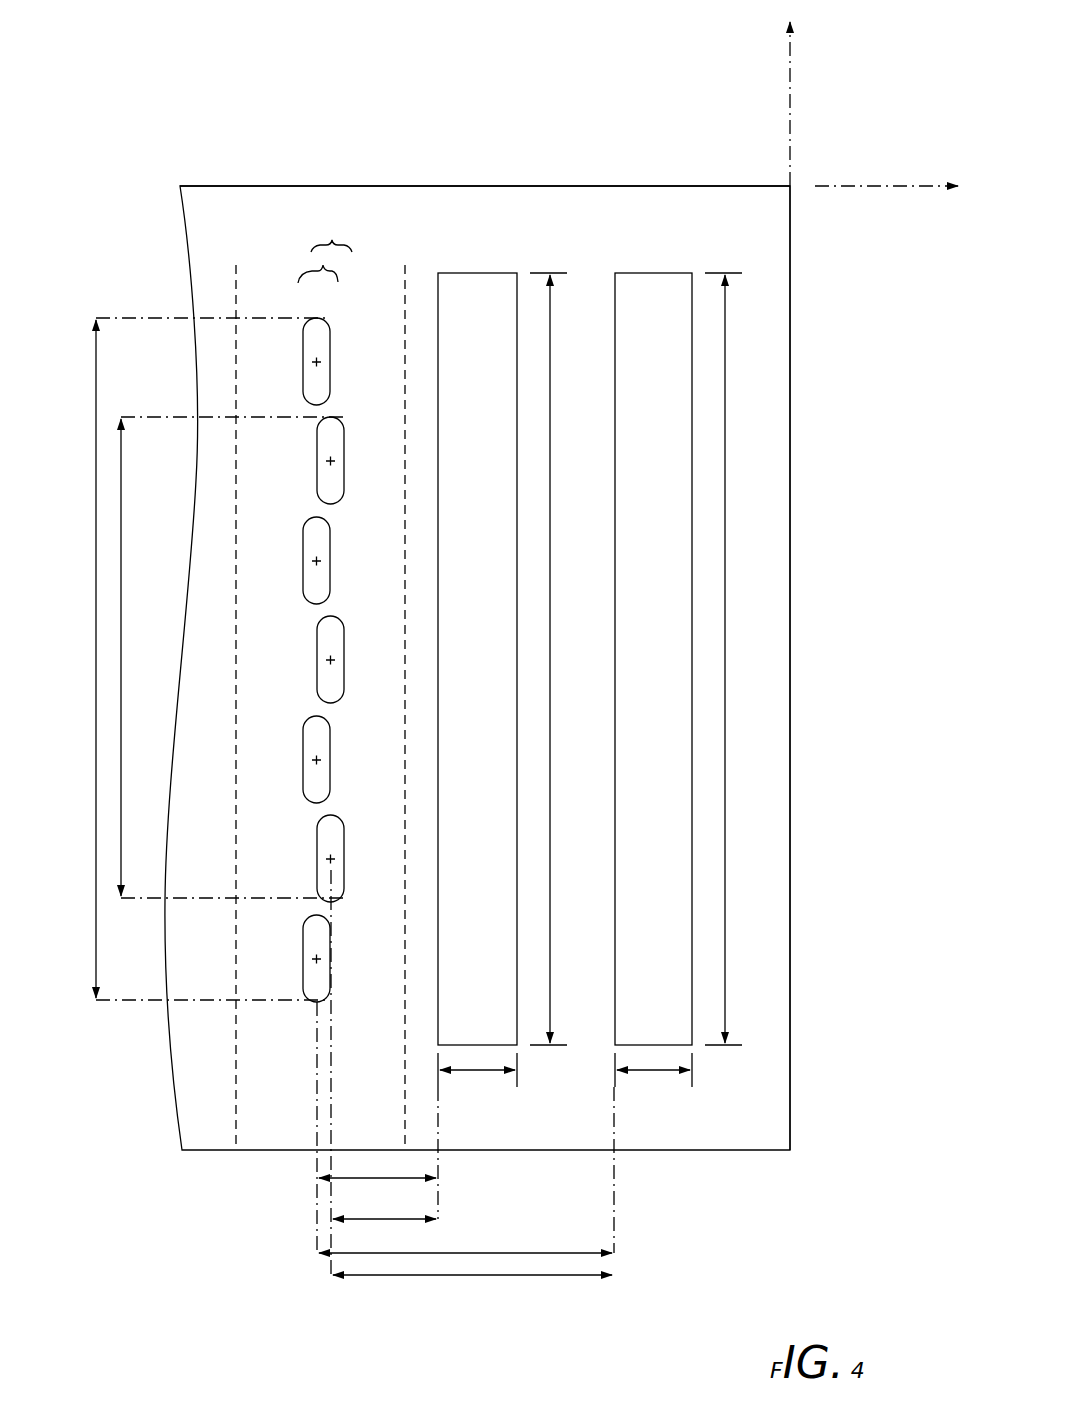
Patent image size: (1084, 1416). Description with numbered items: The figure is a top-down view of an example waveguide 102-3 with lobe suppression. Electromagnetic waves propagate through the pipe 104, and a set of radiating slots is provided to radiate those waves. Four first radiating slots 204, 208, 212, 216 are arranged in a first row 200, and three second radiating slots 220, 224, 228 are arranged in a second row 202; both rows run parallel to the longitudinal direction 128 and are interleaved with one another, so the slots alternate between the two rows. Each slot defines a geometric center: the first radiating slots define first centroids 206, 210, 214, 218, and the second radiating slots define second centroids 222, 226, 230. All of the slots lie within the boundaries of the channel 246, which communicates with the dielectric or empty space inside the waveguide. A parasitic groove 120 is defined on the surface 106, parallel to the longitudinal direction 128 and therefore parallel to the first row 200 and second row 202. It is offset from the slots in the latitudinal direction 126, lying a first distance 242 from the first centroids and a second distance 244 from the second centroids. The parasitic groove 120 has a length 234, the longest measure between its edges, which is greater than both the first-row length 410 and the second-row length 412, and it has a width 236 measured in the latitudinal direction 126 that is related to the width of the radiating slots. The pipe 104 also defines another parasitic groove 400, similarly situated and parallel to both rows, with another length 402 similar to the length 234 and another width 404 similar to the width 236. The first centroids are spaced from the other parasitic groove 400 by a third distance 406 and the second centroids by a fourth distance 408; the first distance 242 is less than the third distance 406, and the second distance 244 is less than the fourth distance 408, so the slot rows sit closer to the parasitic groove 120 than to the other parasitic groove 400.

The waveguide 102-3 is at (290, 44).
The pipe 104 is at (416, 183).
The surface 106 is at (586, 197).
The latitudinal direction 126 is at (858, 186).
The longitudinal direction 128 is at (792, 103).
The parasitic groove 120 is at (500, 270).
The other parasitic groove 400 is at (651, 270).
The first row 200 is at (323, 265).
The second row 202 is at (332, 240).
The first radiating slot 204 is at (316, 318).
The first centroid 206 is at (315, 353).
The first radiating slot 208 is at (316, 517).
The first centroid 210 is at (315, 552).
The first radiating slot 212 is at (316, 716).
The first centroid 214 is at (315, 751).
The first radiating slot 216 is at (304, 960).
The first centroid 218 is at (316, 946).
The second radiating slot 220 is at (330, 417).
The second centroid 222 is at (332, 452).
The second radiating slot 224 is at (330, 616).
The second centroid 226 is at (332, 651).
The second radiating slot 228 is at (330, 815).
The second centroid 230 is at (332, 850).
The length 234 is at (551, 1022).
The width 236 is at (477, 1072).
The first distance 242 is at (415, 1178).
The second distance 244 is at (415, 1219).
The channel 246 is at (234, 1062).
The other length 402 is at (726, 1022).
The other width 404 is at (653, 1072).
The third distance 406 is at (595, 1253).
The fourth distance 408 is at (595, 1275).
The first-row length 410 is at (122, 540).
The second-row length 412 is at (95, 822).